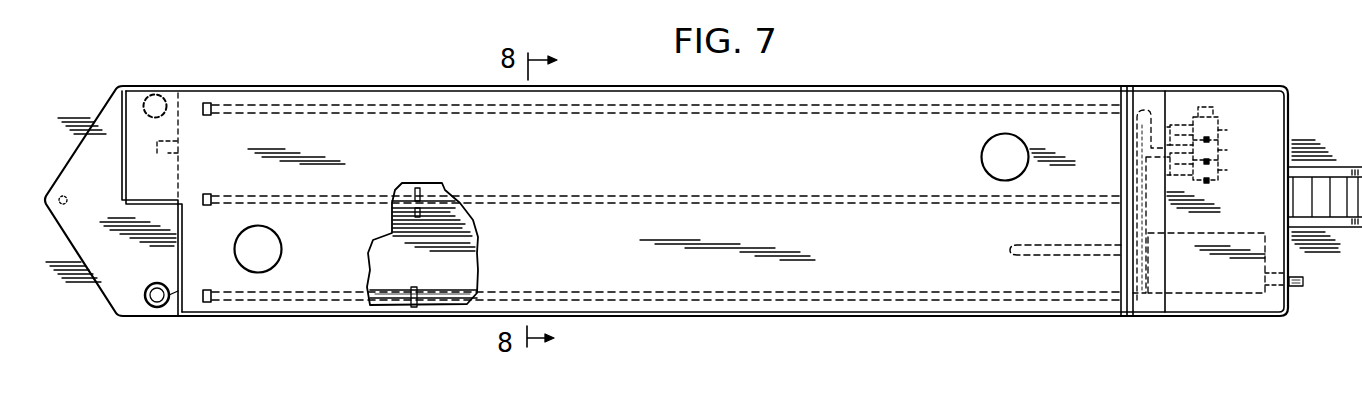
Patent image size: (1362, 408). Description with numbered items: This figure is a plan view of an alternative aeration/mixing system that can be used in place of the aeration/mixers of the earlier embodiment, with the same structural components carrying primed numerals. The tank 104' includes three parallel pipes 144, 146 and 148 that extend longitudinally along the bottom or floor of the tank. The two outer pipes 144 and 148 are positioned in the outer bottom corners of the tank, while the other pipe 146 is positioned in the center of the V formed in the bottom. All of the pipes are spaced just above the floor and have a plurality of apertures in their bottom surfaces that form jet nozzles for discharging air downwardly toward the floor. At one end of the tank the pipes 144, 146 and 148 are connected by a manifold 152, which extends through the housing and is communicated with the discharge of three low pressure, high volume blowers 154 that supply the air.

The tank 104' is at (703, 224).
The pipe 144 is at (432, 295).
The pipe 146 is at (442, 198).
The pipe 148 is at (587, 113).
The manifold 152 is at (1122, 270).
The low pressure, high volume blowers 154 is at (1227, 131).